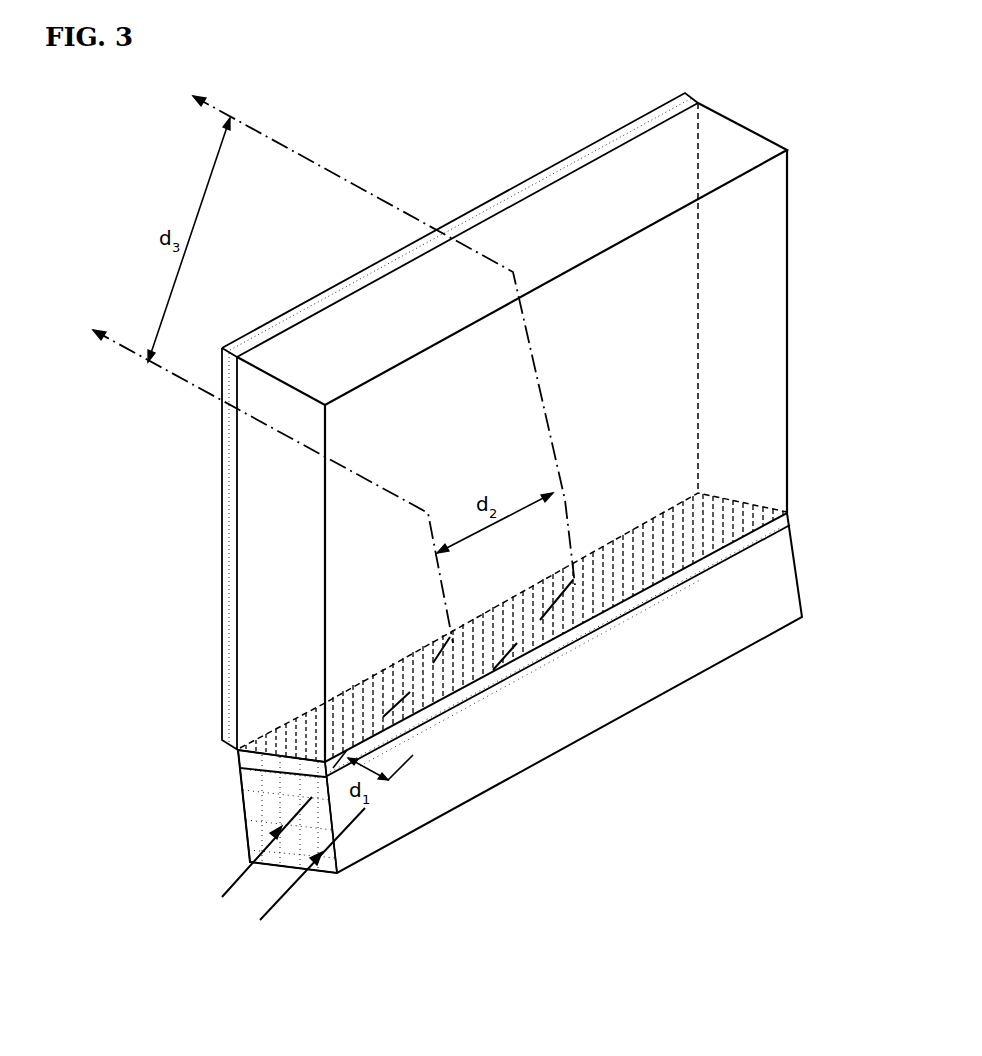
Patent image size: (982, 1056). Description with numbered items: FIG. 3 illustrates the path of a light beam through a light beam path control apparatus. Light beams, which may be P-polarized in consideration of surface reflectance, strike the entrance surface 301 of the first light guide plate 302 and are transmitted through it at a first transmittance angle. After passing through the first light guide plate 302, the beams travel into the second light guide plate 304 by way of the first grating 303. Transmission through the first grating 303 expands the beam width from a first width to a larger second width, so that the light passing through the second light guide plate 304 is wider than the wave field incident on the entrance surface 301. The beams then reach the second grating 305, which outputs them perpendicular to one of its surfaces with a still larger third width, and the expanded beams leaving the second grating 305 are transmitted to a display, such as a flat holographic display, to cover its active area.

The entrance surface 301 is at (250, 813).
The first light guide plate 302 is at (620, 705).
The first grating 303 is at (782, 513).
The second light guide plate 304 is at (770, 283).
The second grating 305 is at (230, 466).